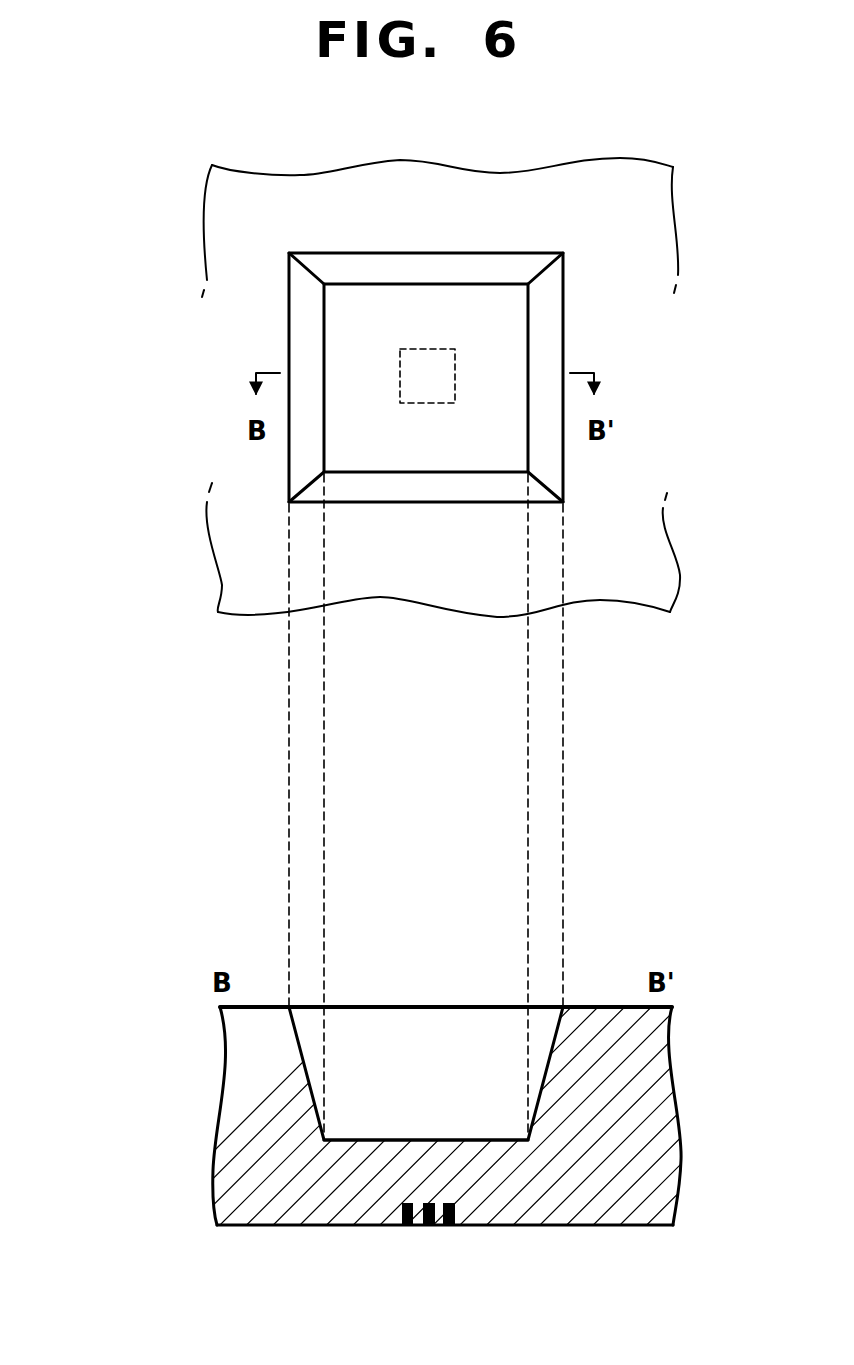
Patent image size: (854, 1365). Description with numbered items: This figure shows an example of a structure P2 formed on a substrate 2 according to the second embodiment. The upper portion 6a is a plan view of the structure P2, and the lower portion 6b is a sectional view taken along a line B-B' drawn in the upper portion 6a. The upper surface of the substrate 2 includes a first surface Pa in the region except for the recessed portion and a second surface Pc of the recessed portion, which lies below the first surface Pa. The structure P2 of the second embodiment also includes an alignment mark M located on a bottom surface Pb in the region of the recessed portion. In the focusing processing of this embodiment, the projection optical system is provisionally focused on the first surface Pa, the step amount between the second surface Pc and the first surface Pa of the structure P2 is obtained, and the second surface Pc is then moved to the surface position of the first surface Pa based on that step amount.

The upper portion (plan view) 6a is at (152, 152).
The lower portion (sectional view) 6b is at (152, 903).
The substrate 2 is at (668, 918).
The structure P2 is at (502, 264).
The first surface Pa is at (634, 327).
The bottom surface Pb is at (258, 1226).
The second surface Pc is at (380, 413).
The alignment mark M is at (425, 373).